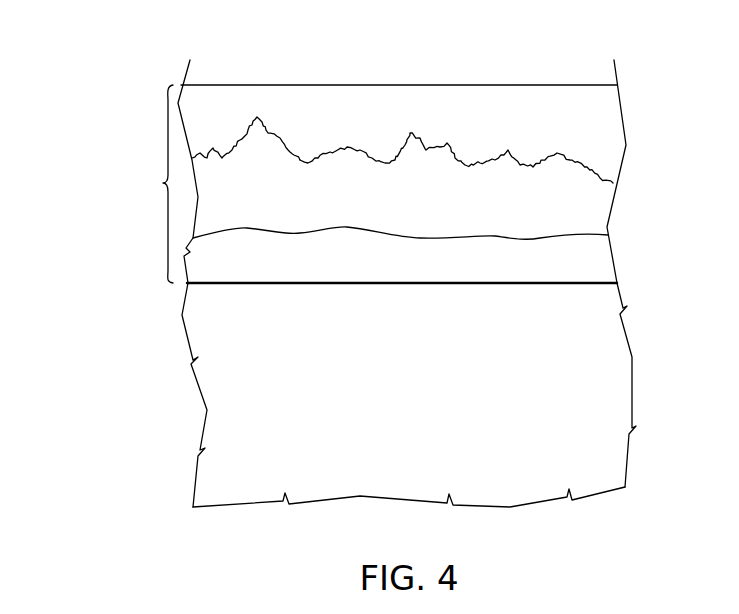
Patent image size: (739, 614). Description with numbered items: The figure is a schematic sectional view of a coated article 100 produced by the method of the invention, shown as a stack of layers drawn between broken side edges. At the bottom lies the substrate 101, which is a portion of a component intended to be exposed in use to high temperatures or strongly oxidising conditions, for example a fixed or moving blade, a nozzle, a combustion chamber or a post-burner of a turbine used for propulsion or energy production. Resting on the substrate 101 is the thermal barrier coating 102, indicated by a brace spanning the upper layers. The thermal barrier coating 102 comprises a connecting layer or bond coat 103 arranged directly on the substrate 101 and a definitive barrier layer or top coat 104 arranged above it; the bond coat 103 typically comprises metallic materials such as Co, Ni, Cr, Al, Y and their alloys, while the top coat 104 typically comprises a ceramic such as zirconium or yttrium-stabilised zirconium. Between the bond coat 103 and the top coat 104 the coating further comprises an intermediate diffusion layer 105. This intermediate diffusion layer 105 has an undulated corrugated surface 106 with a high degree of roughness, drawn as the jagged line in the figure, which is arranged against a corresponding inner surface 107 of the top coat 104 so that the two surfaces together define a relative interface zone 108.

The coated article 100 is at (118, 388).
The substrate 101 is at (607, 357).
The thermal barrier coating 102 is at (145, 184).
The bond coat 103 is at (597, 258).
The top coat 104 is at (343, 102).
The intermediate diffusion layer 105 is at (597, 208).
The undulated corrugated surface 106 is at (532, 165).
The inner surface 107 is at (232, 142).
The interface zone 108 is at (443, 143).